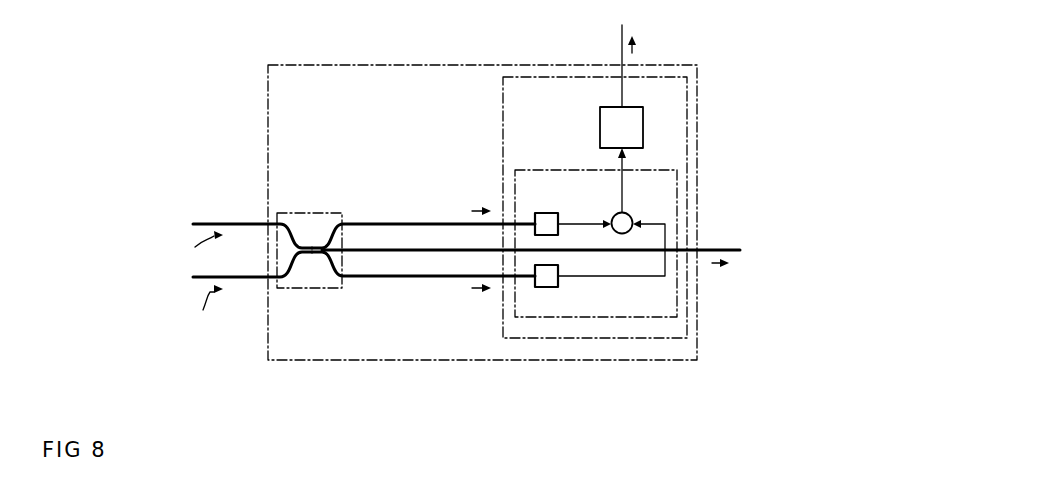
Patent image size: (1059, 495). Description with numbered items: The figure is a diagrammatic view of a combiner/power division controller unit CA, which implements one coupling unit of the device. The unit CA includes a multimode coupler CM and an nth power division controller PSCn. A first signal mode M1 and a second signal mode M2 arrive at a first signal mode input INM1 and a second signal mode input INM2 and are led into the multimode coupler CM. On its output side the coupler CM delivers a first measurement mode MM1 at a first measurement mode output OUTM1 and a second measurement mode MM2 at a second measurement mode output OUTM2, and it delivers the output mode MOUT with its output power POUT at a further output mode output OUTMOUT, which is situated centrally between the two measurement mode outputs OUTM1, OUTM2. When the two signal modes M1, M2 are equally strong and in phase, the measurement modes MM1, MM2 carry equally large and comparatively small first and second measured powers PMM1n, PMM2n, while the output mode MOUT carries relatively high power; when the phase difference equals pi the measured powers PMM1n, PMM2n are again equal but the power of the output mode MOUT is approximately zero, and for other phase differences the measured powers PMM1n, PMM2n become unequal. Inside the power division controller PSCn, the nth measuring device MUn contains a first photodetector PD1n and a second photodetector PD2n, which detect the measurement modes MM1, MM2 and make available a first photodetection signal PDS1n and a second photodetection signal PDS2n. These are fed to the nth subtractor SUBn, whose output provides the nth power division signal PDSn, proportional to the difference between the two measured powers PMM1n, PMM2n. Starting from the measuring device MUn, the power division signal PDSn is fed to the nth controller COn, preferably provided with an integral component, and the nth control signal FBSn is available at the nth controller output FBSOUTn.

The combiner/power division controller unit CA is at (268, 100).
The multimode coupler CM is at (293, 212).
The first signal mode input INM1 is at (280, 222).
The second signal mode input INM2 is at (278, 290).
The first measurement mode output OUTM1 is at (341, 224).
The second measurement mode output OUTM2 is at (347, 280).
The output mode output OUTMOUT is at (332, 249).
The first signal mode M1 is at (185, 244).
The second signal mode M2 is at (185, 322).
The nth power division controller PSCn is at (503, 97).
The first photodetector PD1n is at (535, 213).
The second photodetector PD2n is at (547, 287).
The first photodetection signal PDS1n is at (589, 209).
The second photodetection signal PDS2n is at (590, 288).
The nth power division signal PDSn is at (610, 196).
The first measured power PMM1n is at (450, 179).
The first measurement mode MM1 is at (476, 211).
The second measured power PMM2n is at (445, 320).
The second measurement mode MM2 is at (476, 288).
The nth controller output FBSOUTn is at (617, 107).
The nth control signal FBSn is at (632, 46).
The nth controller COn is at (643, 127).
The nth measuring device MUn is at (658, 170).
The nth subtractor SUBn is at (634, 216).
The output power POUT is at (741, 300).
The output mode MOUT is at (718, 265).